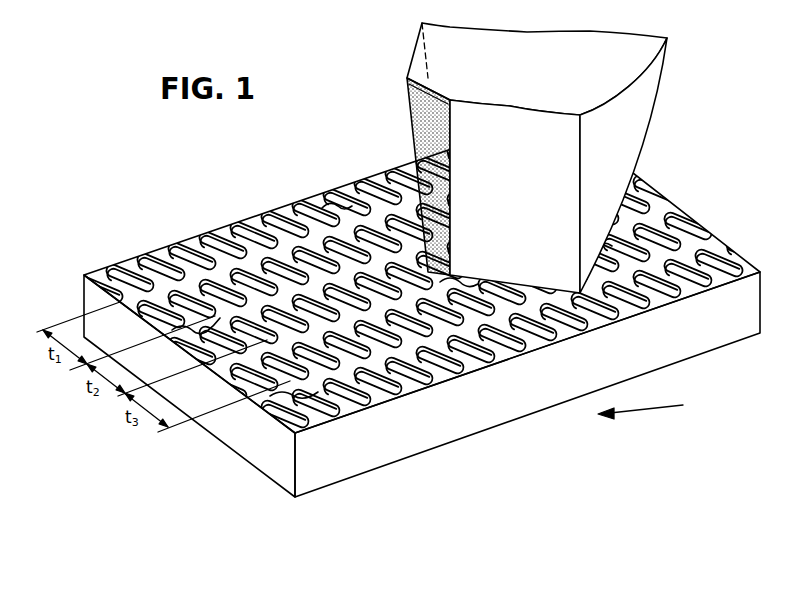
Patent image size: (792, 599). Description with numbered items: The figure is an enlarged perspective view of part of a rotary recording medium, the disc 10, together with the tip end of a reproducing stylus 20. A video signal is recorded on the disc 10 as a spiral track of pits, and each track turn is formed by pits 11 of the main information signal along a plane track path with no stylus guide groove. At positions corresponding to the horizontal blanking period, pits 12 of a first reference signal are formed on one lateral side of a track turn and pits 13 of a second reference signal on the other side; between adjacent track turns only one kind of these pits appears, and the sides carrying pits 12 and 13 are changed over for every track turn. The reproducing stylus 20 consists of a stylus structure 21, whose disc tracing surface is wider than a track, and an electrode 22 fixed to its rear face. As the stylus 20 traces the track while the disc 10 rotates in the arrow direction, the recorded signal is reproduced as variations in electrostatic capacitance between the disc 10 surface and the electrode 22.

The disc 10 is at (168, 244).
The pits of the main information signal 11 is at (262, 236).
The pits of a first reference signal 12 is at (332, 206).
The pits of a second reference signal 13 is at (178, 333).
The reproducing stylus 20 is at (522, 158).
The stylus structure 21 is at (640, 112).
The electrode 22 is at (416, 113).